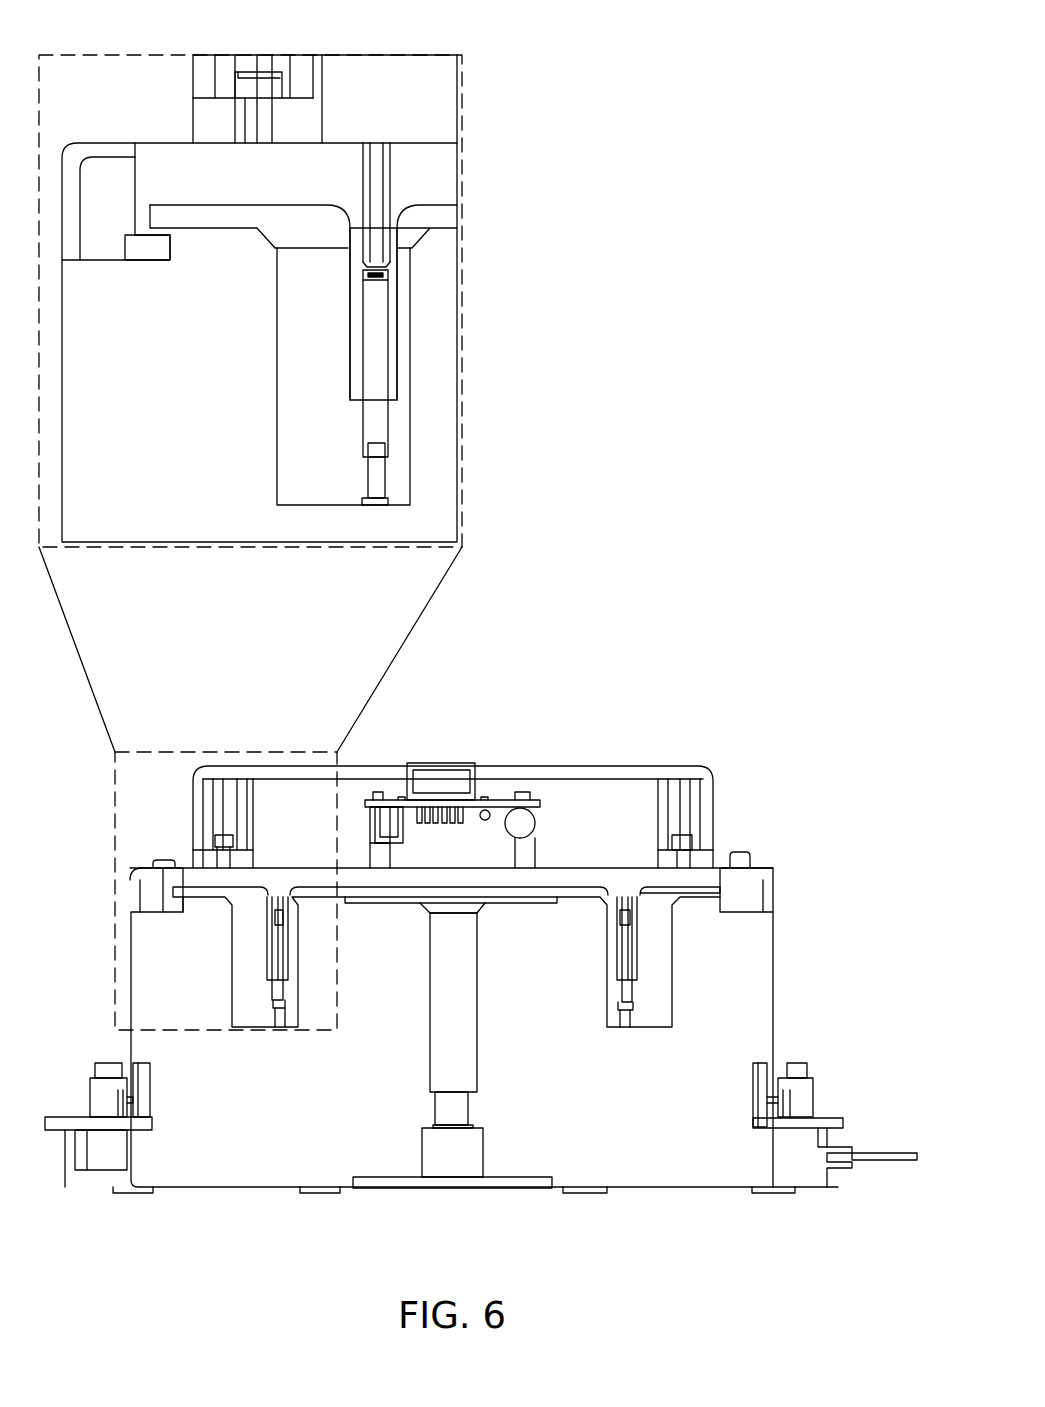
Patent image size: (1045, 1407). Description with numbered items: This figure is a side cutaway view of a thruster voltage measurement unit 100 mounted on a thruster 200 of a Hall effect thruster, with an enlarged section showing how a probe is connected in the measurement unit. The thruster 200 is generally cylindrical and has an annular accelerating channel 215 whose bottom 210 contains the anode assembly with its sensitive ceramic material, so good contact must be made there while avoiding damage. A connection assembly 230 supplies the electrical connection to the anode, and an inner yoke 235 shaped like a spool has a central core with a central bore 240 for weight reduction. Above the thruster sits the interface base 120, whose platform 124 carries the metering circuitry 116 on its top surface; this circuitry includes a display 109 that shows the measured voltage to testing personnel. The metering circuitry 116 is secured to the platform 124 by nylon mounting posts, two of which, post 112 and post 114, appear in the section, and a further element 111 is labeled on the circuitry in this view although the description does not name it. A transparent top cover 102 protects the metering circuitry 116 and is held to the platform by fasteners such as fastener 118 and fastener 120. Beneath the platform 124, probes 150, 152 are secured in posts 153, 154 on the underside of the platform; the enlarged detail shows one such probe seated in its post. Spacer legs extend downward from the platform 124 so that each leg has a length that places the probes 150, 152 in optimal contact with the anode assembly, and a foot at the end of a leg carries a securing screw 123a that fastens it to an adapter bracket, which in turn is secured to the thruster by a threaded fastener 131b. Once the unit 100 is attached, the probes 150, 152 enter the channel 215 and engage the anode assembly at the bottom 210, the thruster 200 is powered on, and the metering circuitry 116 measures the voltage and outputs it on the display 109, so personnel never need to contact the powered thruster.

The thruster voltage measurement unit 100 is at (828, 752).
The top cover 102 is at (440, 103).
The display 109 is at (467, 763).
The circuit board 111 is at (523, 795).
The nylon mounting post 112 is at (377, 817).
The nylon mounting post 114 is at (537, 797).
The metering circuitry 116 is at (392, 800).
The fastener 118 is at (217, 840).
The interface base 120 is at (693, 838).
The securing screw 123a is at (807, 1068).
The platform 124 is at (152, 147).
The fastener 131b is at (750, 855).
The probe 150 is at (383, 328).
The probe 152 is at (637, 928).
The post 153 is at (637, 972).
The post 154 is at (353, 292).
The thruster 200 is at (765, 1020).
The bottom of the channel 210 is at (412, 487).
The annular accelerating channel 215 is at (270, 1012).
The connection assembly 230 is at (850, 1162).
The inner yoke 235 is at (578, 897).
The central bore 240 is at (463, 997).